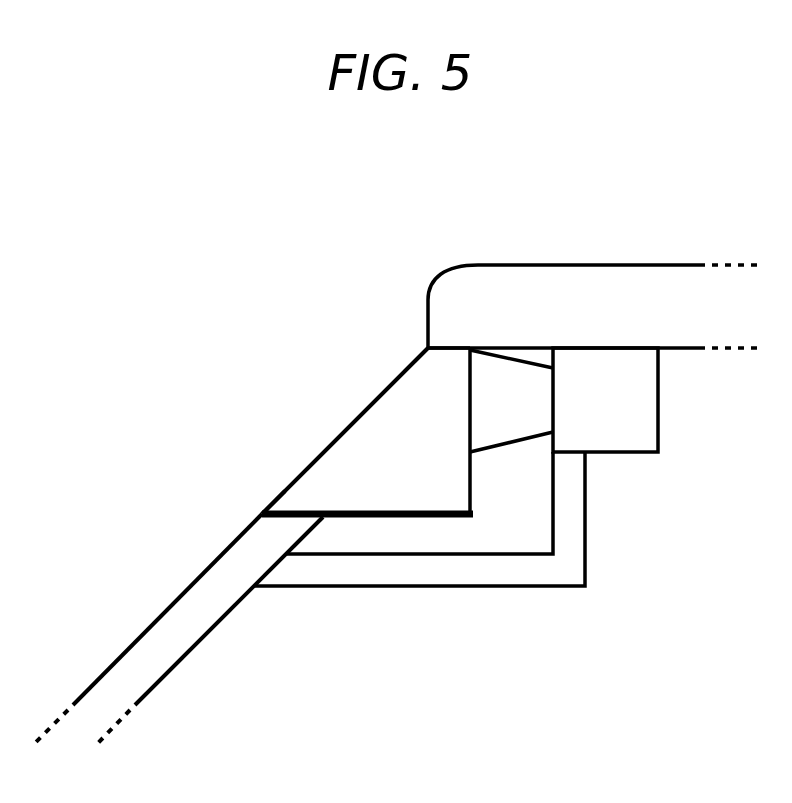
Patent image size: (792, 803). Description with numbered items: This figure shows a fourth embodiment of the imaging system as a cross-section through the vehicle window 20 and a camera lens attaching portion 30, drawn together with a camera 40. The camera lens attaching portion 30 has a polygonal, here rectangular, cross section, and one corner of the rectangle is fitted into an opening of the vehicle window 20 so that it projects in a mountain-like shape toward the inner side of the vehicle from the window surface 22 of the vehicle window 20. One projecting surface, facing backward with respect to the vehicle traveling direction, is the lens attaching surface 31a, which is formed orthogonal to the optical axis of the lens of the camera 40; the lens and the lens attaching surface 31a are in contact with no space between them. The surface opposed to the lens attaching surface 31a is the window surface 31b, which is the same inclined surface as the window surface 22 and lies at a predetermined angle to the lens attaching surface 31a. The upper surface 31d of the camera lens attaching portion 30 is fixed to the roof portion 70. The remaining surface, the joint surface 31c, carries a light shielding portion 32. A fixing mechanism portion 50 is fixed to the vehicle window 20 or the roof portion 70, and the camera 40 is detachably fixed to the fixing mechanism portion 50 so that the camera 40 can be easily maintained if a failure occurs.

The vehicle window 20 is at (198, 629).
The window surface 22 is at (183, 686).
The camera lens attaching portion 30 is at (307, 437).
The lens attaching surface 31a is at (473, 483).
The window surface 31b is at (332, 444).
The joint surface 31c is at (287, 513).
The upper surface 31d is at (452, 353).
The light shielding portion 32 is at (262, 514).
The camera 40 is at (652, 455).
The fixing mechanism portion 50 is at (583, 590).
The roof portion 70 is at (568, 265).